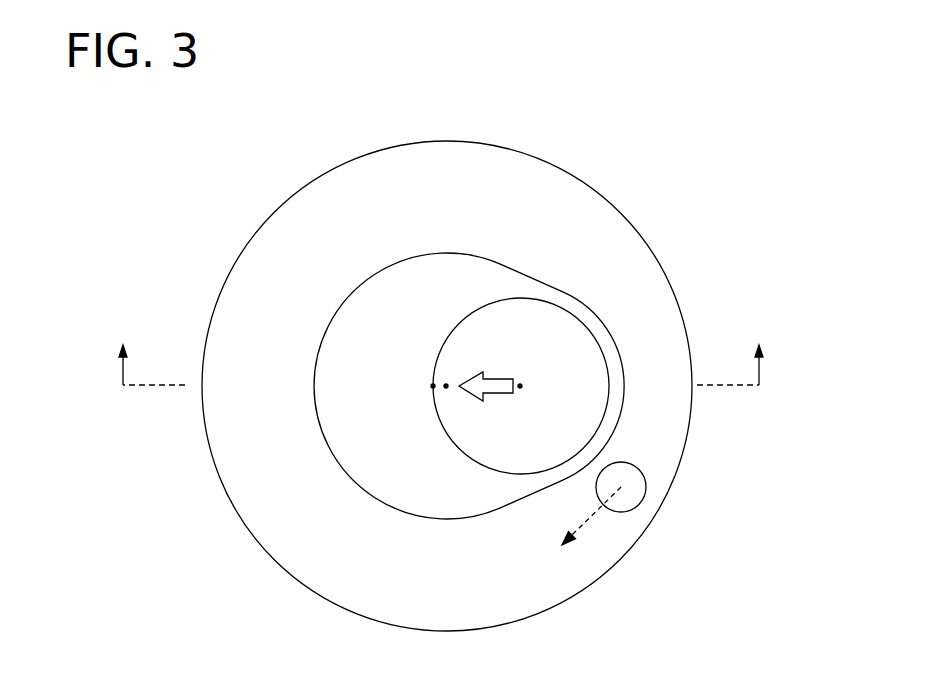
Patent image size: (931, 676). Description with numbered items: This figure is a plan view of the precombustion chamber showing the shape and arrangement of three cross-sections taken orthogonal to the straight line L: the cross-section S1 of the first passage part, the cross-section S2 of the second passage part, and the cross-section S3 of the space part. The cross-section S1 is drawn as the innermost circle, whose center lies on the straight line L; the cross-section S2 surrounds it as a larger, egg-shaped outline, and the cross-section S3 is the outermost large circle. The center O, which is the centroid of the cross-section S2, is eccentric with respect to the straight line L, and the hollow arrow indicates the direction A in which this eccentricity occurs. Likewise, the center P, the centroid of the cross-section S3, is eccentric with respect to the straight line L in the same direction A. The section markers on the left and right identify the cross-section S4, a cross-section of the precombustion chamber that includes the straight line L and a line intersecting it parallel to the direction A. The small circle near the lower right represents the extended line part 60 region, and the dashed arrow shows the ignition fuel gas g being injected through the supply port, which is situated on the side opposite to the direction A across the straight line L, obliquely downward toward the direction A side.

The cross-section of first passage part S1 is at (594, 335).
The cross-section of second passage part S2 is at (566, 292).
The cross-section of space part S3 is at (601, 195).
The cross-section of precombustion chamber S4 is at (441, 349).
The extended line part 60 is at (630, 464).
The ignition fuel gas g is at (594, 512).
The direction A is at (486, 374).
The center of cross-section S2 O is at (446, 385).
The center of cross-section S3 P is at (433, 385).
The straight line L is at (522, 386).